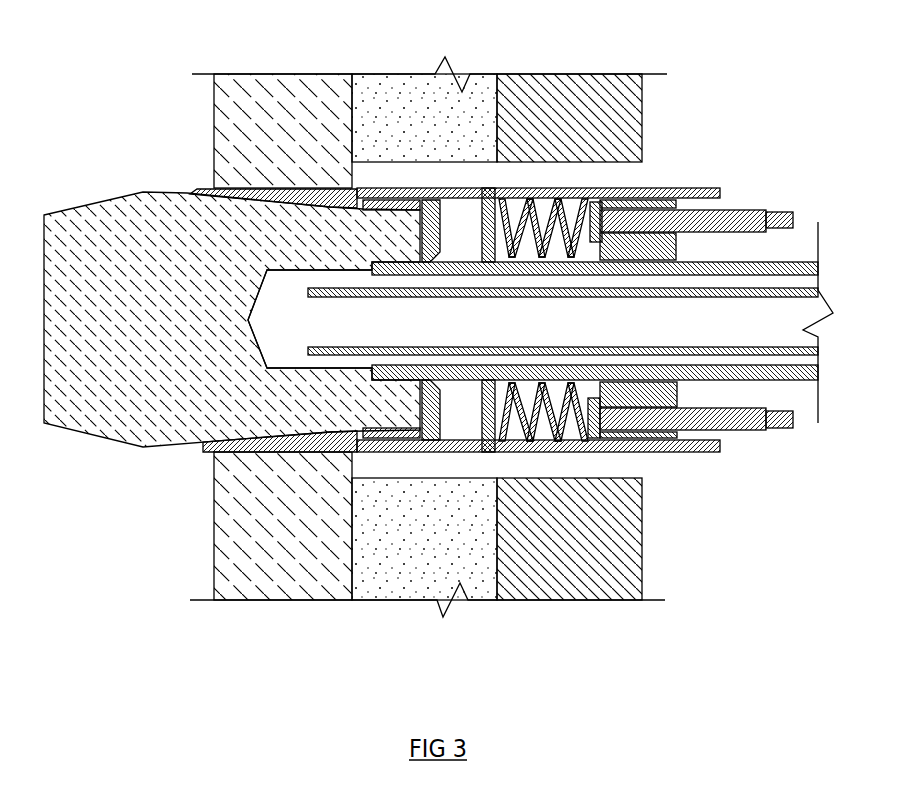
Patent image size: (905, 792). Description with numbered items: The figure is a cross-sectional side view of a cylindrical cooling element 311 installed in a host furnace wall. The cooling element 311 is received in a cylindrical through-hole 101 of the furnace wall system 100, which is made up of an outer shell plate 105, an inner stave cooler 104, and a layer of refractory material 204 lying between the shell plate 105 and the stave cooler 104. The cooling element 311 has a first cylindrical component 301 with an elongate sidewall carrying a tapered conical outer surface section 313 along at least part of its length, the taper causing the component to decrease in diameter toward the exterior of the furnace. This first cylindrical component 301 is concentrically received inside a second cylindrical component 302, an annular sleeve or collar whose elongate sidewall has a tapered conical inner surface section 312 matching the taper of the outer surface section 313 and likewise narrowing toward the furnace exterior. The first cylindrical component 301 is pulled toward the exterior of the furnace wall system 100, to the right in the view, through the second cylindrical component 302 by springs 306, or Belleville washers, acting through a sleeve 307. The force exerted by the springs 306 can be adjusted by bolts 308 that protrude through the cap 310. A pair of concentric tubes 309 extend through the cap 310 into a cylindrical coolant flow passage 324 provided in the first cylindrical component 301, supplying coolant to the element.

The furnace wall system 100 is at (428, 367).
The cylindrical through-hole 101 is at (402, 173).
The inner stave cooler 104 is at (258, 572).
The outer shell plate 105 is at (545, 572).
The layer of refractory material 204 is at (398, 573).
The first cylindrical component 301 is at (125, 398).
The second cylindrical component 302 is at (203, 445).
The springs 306 is at (550, 417).
The sleeve 307 is at (710, 446).
The bolts 308 is at (718, 419).
The concentric tubes 309 is at (784, 286).
The cap 310 is at (637, 393).
The cylindrical cooling element 311 is at (438, 293).
The tapered conical inner surface section 312 is at (297, 193).
The tapered conical outer surface section 313 is at (187, 193).
The cylindrical coolant flow passage 324 is at (304, 331).